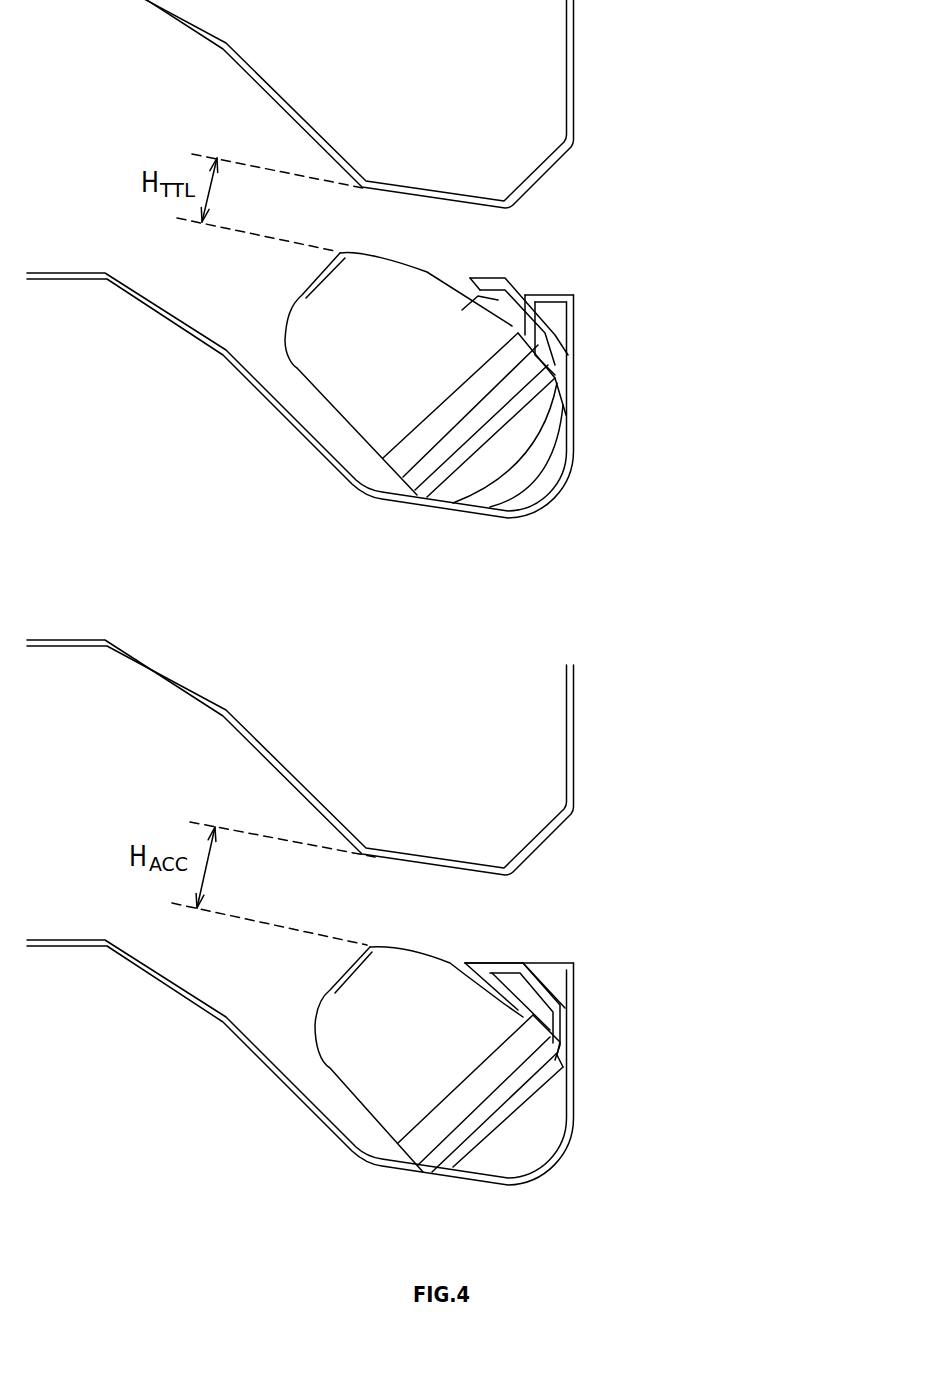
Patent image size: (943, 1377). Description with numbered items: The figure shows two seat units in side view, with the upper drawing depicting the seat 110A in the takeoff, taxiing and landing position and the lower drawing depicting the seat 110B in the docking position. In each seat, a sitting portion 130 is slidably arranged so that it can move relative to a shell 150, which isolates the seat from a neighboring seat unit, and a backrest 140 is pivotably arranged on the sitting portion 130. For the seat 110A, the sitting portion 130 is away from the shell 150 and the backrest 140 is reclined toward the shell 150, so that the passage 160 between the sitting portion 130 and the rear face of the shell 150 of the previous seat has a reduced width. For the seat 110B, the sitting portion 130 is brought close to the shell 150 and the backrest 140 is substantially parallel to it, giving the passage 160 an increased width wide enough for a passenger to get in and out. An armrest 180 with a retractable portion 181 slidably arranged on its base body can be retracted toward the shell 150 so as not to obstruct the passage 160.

The seat in TTL position 110A is at (273, 337).
The seat in docking position 110B is at (290, 1027).
The sitting portion 130 is at (340, 375).
The backrest 140 is at (487, 433).
The shell 150 is at (576, 95).
The passage 160 is at (447, 247).
The armrest 180 is at (558, 352).
The retractable portion 181 is at (522, 320).